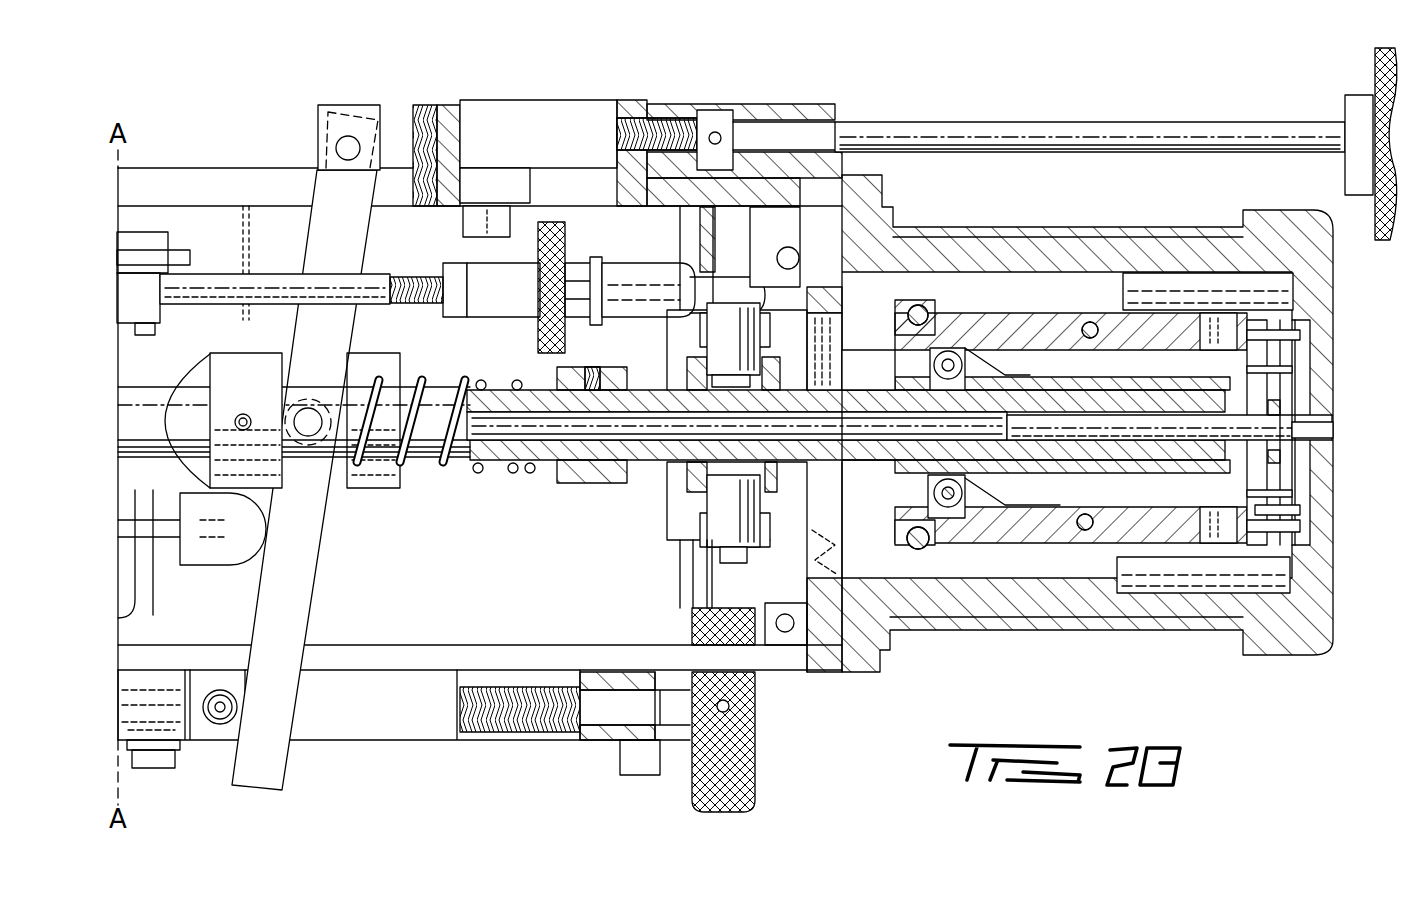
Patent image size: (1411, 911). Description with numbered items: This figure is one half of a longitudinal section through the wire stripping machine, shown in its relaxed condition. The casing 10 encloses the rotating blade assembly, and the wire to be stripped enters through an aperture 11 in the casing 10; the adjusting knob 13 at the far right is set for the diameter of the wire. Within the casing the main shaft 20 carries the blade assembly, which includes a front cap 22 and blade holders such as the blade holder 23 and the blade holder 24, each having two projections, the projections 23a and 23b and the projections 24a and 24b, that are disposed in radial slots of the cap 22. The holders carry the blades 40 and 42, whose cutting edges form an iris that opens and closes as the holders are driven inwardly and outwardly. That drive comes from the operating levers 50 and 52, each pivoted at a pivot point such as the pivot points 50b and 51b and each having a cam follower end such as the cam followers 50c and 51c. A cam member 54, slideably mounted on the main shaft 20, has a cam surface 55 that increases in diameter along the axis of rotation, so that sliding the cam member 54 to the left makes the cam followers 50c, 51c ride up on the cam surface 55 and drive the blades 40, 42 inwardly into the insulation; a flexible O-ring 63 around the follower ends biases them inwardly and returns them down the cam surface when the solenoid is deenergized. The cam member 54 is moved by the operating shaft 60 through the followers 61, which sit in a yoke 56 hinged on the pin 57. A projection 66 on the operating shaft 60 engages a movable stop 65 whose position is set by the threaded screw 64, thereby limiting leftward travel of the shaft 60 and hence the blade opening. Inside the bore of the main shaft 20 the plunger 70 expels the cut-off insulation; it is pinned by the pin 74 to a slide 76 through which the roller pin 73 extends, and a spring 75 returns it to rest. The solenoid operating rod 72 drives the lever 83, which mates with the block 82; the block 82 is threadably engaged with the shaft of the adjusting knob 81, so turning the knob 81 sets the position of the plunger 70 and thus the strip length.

The casing 10 is at (1083, 227).
The aperture 11 is at (1318, 450).
The adjusting knob 13 is at (1380, 238).
The main shaft 20 is at (140, 393).
The front cap 22 is at (1278, 418).
The blade holder 23 is at (1225, 512).
The projection 23a is at (1292, 490).
The projection 23b is at (1300, 530).
The blade holder 24 is at (1225, 340).
The projection 24a is at (1292, 385).
The projection 24b is at (1300, 335).
The blade 40 is at (1290, 355).
The blade 42 is at (1285, 515).
The operating lever 50 is at (1003, 532).
The pivot point 50b is at (1080, 530).
The cam follower 50c is at (900, 483).
The pivot point 51b is at (1095, 320).
The cam follower 51c is at (905, 350).
The operating lever 52 is at (1035, 322).
The cam member 54 is at (858, 386).
The cam surface 55 is at (990, 362).
The yoke 56 is at (680, 328).
The pin 57 is at (695, 228).
The operating shaft 60 is at (272, 283).
The follower 61 is at (760, 355).
The O-ring 63 is at (930, 310).
The threaded screw 64 is at (1248, 140).
The movable stop 65 is at (483, 233).
The projection 66 is at (555, 262).
The plunger 70 is at (545, 420).
The operating rod 72 is at (165, 540).
The roller pin 73 is at (308, 445).
The pin 74 is at (243, 414).
The spring 75 is at (465, 375).
The slide 76 is at (218, 353).
The adjusting knob 81 is at (757, 797).
The block 82 is at (415, 740).
The lever 83 is at (268, 718).